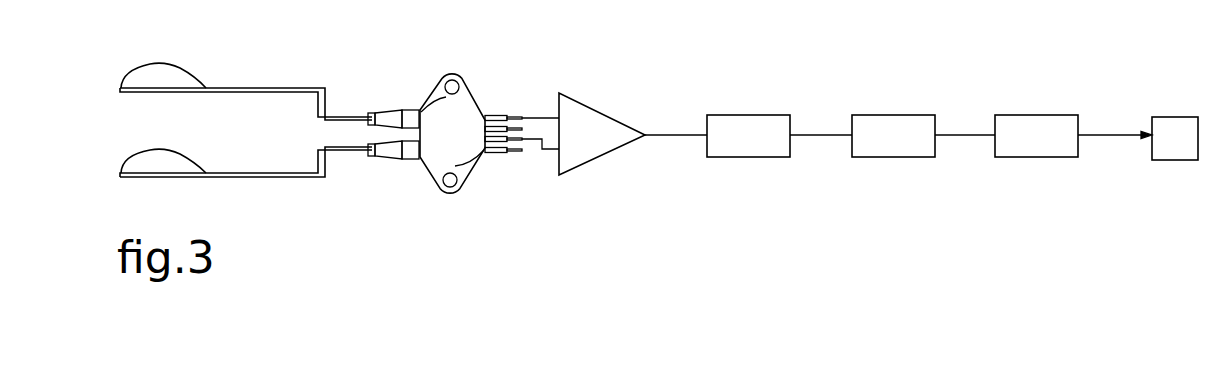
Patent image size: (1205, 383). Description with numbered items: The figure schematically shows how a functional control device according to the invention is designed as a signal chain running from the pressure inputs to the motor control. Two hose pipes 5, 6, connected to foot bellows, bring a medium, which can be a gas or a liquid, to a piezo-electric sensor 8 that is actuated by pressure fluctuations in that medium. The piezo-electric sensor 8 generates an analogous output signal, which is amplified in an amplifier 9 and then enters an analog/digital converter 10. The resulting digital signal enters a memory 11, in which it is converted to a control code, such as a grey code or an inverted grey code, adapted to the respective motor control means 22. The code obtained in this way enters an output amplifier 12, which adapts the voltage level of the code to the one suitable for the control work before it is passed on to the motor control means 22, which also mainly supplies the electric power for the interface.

The hose pipe 5 is at (246, 69).
The hose pipe 6 is at (246, 198).
The piezo-electric sensor 8 is at (464, 110).
The amplifier 9 is at (630, 101).
The analog/digital converter 10 is at (791, 93).
The memory 11 is at (932, 93).
The output amplifier 12 is at (1077, 94).
The motor control means 22 is at (1146, 168).